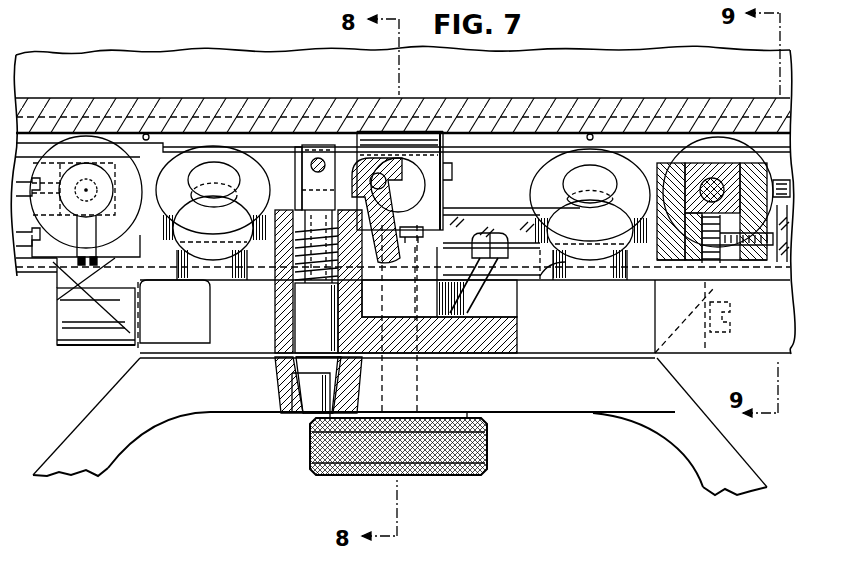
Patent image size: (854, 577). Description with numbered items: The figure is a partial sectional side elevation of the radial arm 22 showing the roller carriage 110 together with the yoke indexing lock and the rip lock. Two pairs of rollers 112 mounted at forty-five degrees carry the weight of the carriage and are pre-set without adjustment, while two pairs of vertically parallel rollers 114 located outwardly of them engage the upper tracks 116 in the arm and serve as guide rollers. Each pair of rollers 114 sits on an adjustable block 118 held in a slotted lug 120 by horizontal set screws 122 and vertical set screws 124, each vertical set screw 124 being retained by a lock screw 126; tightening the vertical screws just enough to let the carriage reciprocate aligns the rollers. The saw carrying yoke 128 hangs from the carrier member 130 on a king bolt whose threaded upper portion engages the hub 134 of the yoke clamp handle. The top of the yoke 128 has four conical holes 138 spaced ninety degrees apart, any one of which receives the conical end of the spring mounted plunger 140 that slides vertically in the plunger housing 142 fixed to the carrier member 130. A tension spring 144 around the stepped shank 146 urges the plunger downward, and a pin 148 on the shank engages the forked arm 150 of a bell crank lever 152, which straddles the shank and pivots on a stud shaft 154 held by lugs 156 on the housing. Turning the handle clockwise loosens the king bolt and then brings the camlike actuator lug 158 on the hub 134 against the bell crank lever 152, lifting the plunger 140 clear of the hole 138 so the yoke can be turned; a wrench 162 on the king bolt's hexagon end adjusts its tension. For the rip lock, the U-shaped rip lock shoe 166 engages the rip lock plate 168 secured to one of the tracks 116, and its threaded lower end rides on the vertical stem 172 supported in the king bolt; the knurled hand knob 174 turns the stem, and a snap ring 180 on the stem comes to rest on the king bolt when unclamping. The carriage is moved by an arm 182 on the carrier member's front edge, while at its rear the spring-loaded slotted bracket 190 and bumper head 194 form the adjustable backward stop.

The radial arm 22 is at (216, 63).
The roller carriage 110 is at (528, 172).
The 45° angularly mounted rollers 112 is at (248, 167).
The vertically parallel rollers 114 is at (93, 143).
The upper tracks 116 is at (150, 135).
The adjustable block 118 is at (70, 165).
The slotted lug 120 is at (38, 252).
The horizontal set screws 122 is at (29, 180).
The vertical set screws 124 is at (60, 286).
The lock screw 126 is at (22, 265).
The saw carrying yoke 128 is at (229, 411).
The carrier member 130 is at (186, 354).
The hub 134 is at (425, 307).
The conical holes 138 is at (296, 420).
The spring mounted plunger 140 is at (287, 364).
The plunger housing 142 is at (307, 347).
The tension spring 144 is at (312, 282).
The stepped shank 146 is at (310, 258).
The pin 148 is at (319, 160).
The forked arm 150 is at (300, 186).
The bell crank lever 152 is at (381, 170).
The stud shaft 154 is at (402, 165).
The lugs 156 is at (418, 182).
The camlike actuator lug 158 is at (469, 293).
The wrench 162 is at (541, 277).
The rip lock shoe 166 is at (445, 165).
The rip lock plate 168 is at (200, 140).
The vertical stem 172 is at (410, 398).
The knurled hand knob 174 is at (486, 443).
The snap ring 180 is at (425, 226).
The arm 182 is at (744, 346).
The spring-loaded slotted bracket 190 is at (140, 343).
The bumper head 194 is at (58, 342).